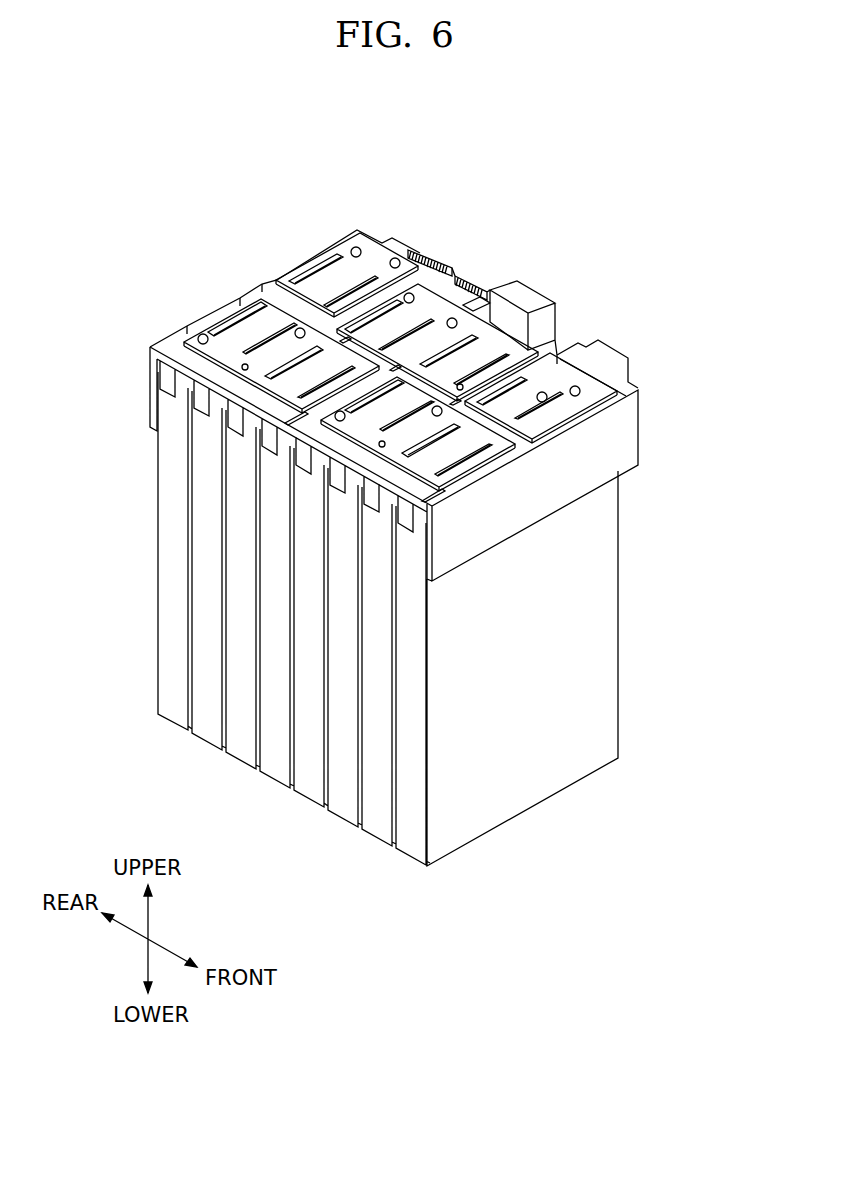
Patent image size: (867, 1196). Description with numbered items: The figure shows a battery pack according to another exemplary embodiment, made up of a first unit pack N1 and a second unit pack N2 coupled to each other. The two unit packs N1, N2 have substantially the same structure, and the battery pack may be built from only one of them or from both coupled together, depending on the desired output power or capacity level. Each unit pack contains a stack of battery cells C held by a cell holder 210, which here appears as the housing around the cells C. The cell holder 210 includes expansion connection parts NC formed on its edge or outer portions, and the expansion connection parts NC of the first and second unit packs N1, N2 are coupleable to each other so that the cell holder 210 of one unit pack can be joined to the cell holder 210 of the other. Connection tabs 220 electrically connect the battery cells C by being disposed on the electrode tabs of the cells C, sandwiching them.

The battery cell C is at (603, 610).
The cell holder 210 is at (628, 431).
The connection tab 220 is at (607, 353).
The expansion connection part NC is at (502, 298).
The second unit pack N2 is at (447, 203).
The first unit pack N1 is at (597, 270).